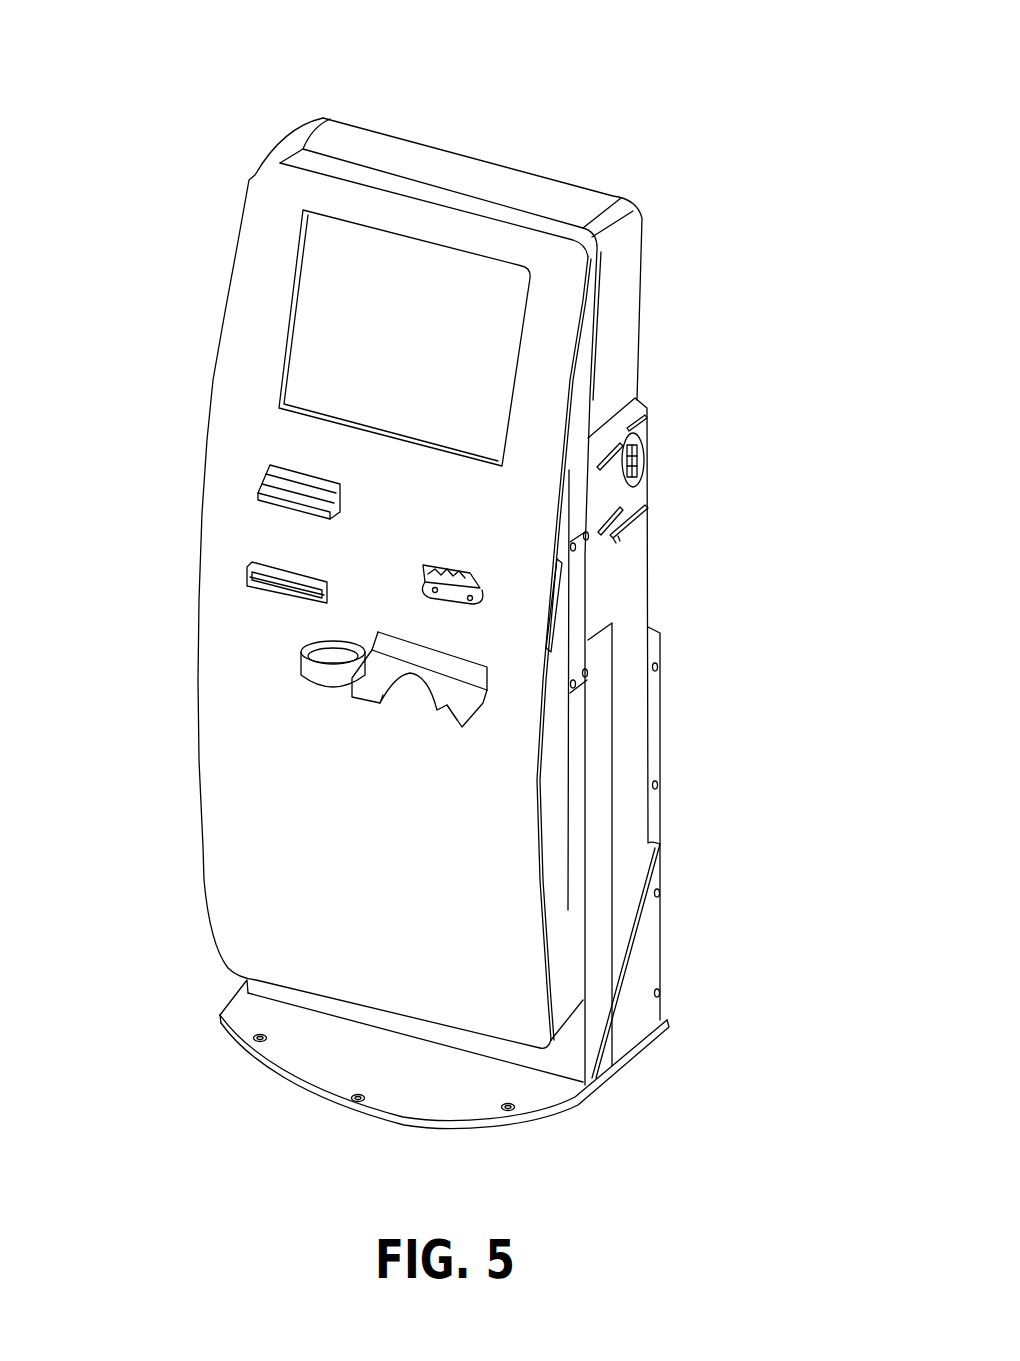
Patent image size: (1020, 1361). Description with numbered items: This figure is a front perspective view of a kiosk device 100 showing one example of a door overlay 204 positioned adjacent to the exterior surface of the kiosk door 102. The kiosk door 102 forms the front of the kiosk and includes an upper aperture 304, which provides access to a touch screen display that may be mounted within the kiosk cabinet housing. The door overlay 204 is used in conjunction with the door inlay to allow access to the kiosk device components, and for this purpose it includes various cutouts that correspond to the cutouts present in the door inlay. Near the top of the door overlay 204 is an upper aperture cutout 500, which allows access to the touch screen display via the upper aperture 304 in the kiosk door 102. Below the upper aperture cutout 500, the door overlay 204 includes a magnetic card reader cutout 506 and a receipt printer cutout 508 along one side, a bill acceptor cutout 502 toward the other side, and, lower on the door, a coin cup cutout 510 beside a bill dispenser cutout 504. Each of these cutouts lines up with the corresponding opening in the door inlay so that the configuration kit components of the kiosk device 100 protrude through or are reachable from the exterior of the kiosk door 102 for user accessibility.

The kiosk device 100 is at (580, 56).
The kiosk door 102 is at (600, 313).
The door overlay 204 is at (202, 850).
The upper aperture 304 is at (322, 290).
The upper aperture cutout 500 is at (280, 347).
The bill acceptor cutout 502 is at (480, 585).
The bill dispenser cutout 504 is at (485, 710).
The magnetic card reader cutout 506 is at (258, 482).
The receipt printer cutout 508 is at (245, 577).
The coin cup cutout 510 is at (298, 657).